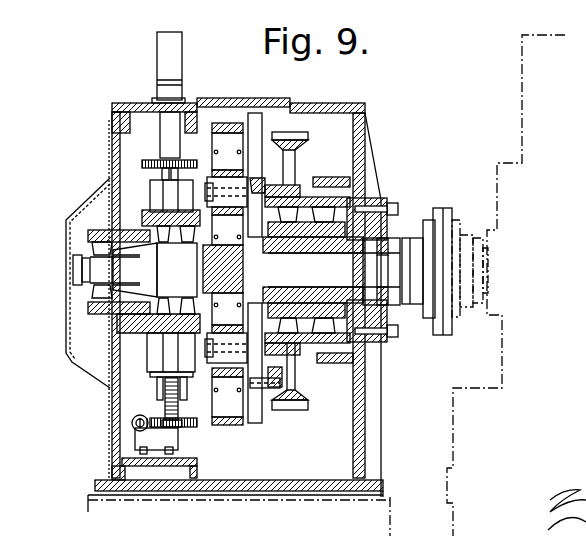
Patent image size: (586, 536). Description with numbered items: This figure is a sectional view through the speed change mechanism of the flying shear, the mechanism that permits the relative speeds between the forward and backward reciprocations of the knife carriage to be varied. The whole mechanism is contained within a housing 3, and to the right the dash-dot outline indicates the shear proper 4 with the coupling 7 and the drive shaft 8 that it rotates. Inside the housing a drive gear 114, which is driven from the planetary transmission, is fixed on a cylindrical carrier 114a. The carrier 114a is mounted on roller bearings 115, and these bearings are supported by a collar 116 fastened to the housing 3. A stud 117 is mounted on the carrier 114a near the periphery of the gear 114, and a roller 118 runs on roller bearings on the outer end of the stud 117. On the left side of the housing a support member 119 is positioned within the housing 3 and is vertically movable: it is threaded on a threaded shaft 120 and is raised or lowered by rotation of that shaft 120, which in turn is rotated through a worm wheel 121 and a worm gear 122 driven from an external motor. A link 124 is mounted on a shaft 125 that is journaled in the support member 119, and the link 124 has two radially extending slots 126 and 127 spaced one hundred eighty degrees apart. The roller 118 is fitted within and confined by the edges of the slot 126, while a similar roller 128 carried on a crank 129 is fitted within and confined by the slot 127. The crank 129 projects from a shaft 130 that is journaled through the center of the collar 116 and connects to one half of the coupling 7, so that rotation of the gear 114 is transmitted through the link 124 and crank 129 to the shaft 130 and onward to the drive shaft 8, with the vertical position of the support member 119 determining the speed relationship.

The housing 3 is at (365, 110).
The shear proper 4 is at (515, 88).
The coupling 7 is at (433, 330).
The drive shaft 8 is at (487, 268).
The drive gear 114 is at (297, 143).
The cylindrical carrier 114a is at (330, 342).
The roller bearings 115 is at (330, 222).
The collar 116 is at (350, 242).
The stud 117 is at (252, 362).
The roller 118 is at (233, 382).
The support member 119 is at (133, 310).
The threaded shaft 120 is at (165, 387).
The worm wheel 121 is at (167, 425).
The worm gear 122 is at (132, 422).
The link 124 is at (222, 427).
The shaft 125 is at (138, 273).
The slot 126 is at (230, 407).
The slot 127 is at (218, 135).
The roller 128 is at (233, 178).
The crank 129 is at (254, 178).
The shaft 130 is at (331, 279).